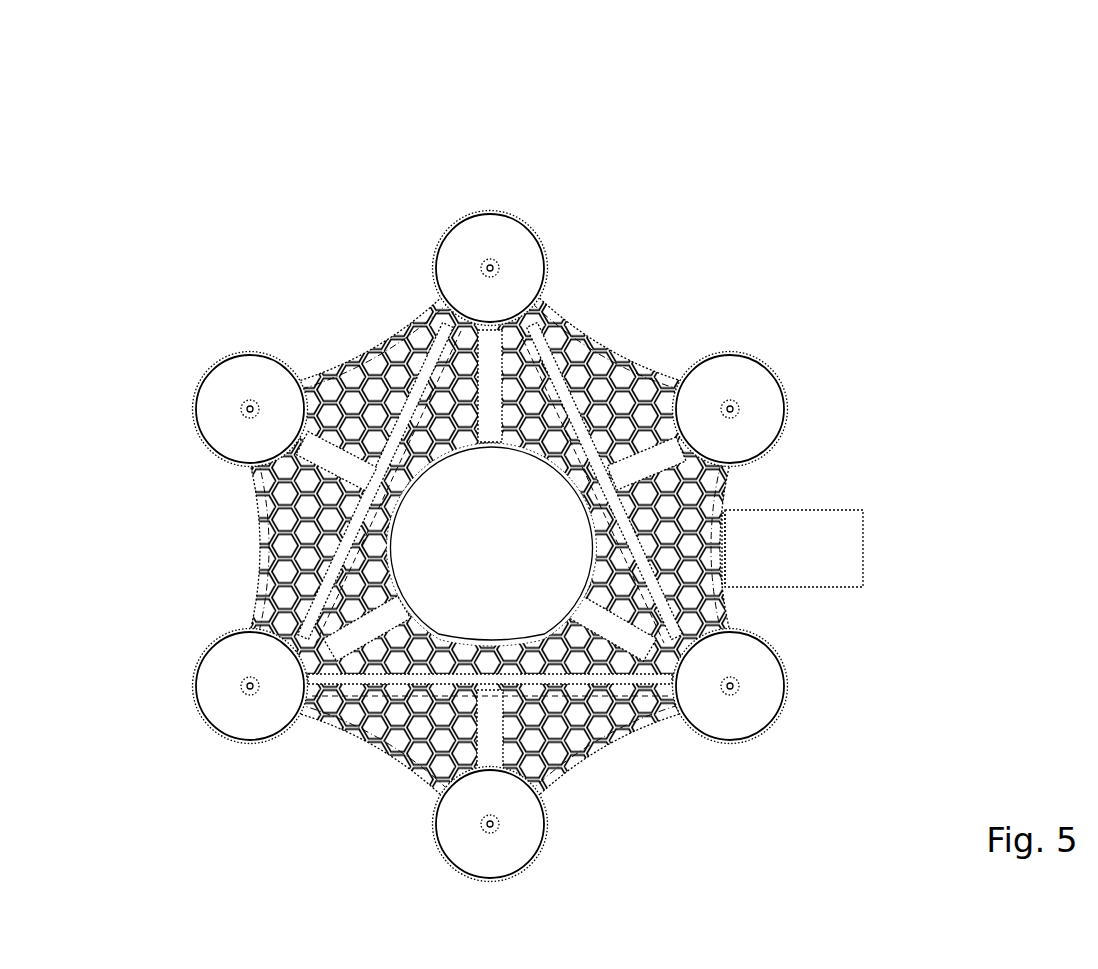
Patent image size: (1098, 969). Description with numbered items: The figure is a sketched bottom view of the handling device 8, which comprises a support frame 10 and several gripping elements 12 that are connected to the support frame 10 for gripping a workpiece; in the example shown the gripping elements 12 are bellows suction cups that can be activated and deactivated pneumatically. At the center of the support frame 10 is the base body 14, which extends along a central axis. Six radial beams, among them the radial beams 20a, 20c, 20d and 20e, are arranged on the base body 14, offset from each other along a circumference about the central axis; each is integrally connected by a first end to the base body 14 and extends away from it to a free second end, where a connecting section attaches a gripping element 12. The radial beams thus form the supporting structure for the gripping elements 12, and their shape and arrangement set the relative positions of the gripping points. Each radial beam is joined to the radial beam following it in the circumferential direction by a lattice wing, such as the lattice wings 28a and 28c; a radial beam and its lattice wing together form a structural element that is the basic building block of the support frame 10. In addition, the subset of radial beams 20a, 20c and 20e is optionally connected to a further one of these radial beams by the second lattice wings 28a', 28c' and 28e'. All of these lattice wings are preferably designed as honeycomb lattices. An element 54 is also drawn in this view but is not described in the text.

The handling device 8 is at (483, 104).
The support frame 10 is at (636, 228).
The gripping element 12 is at (783, 398).
The base body 14 is at (474, 564).
The radial beam 20a is at (490, 362).
The radial beam 20c is at (643, 640).
The radial beam 20d is at (492, 750).
The radial beam 20e is at (325, 645).
The lattice wing 28a is at (621, 338).
The second lattice wing 28a' is at (591, 460).
The lattice wing 28c is at (610, 766).
The second lattice wing 28c' is at (491, 734).
The second lattice wing 28e' is at (312, 487).
The connector block 54 is at (830, 522).